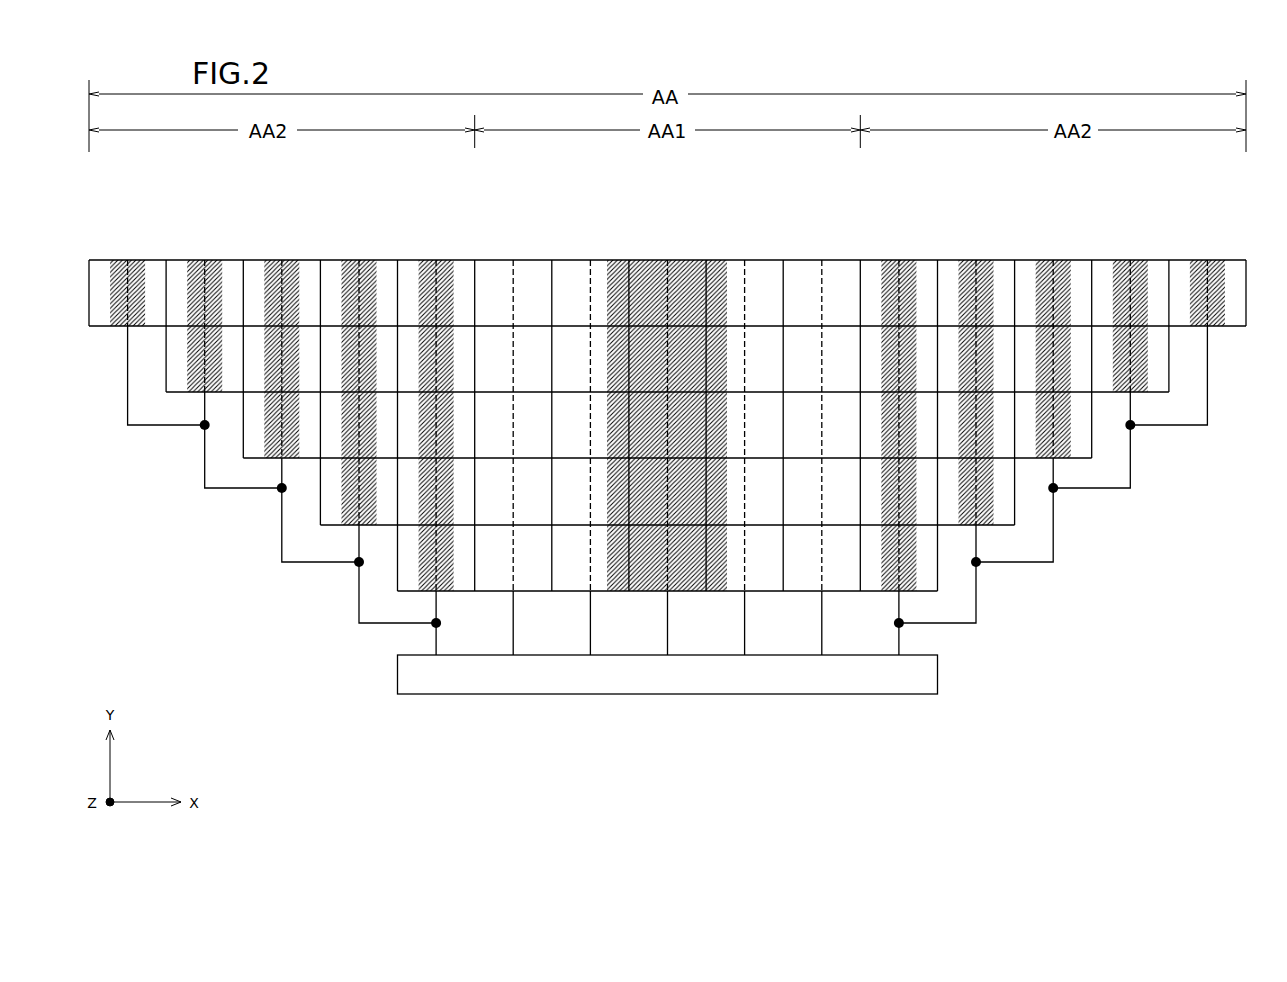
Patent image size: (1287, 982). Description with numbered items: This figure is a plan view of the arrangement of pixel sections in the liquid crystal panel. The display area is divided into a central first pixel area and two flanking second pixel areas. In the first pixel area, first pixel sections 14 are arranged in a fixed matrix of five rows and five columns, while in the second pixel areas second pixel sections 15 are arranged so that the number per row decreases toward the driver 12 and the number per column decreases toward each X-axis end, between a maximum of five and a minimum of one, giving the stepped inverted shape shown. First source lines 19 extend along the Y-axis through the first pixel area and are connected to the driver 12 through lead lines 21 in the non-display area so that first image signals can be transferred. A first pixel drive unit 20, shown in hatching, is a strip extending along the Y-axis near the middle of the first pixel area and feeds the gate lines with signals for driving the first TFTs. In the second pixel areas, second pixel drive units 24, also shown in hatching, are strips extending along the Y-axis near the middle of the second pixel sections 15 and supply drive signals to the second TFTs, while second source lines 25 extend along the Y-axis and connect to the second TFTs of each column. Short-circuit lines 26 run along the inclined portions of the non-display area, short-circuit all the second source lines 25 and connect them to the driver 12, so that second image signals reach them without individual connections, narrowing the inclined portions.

The driver 12 is at (862, 686).
The first pixel section 14 is at (552, 287).
The second pixel section 15 is at (89, 280).
The first source line 19 is at (513, 283).
The first pixel drive unit 20 is at (685, 282).
The lead line 21 is at (590, 632).
The second pixel drive unit 24 is at (138, 272).
The second source line 25 is at (124, 272).
The short-circuit line 26 is at (281, 542).